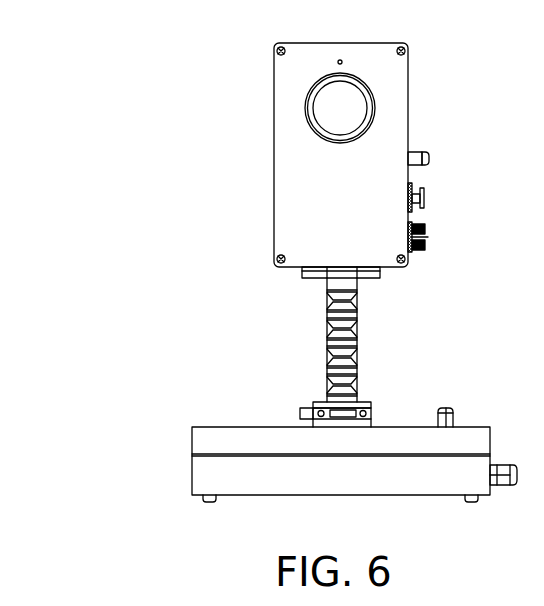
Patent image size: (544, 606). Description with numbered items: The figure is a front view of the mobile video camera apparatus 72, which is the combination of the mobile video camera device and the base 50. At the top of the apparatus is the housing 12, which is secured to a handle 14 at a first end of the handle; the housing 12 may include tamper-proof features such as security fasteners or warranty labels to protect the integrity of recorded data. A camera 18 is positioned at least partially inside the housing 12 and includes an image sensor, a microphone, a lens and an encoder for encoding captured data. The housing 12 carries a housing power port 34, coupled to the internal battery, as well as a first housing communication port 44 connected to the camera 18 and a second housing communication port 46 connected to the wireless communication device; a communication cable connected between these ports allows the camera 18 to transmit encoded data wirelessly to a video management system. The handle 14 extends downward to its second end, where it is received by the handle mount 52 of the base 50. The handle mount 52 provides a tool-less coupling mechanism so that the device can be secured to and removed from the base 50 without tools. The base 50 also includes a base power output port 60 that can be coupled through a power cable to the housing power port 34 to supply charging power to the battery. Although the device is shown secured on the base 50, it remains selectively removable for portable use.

The housing 12 is at (274, 80).
The handle 14 is at (327, 343).
The camera 18 is at (372, 109).
The housing power port 34 is at (424, 198).
The first housing communication port 44 is at (429, 158).
The second housing communication port 46 is at (428, 237).
The base 50 is at (226, 427).
The handle mount 52 is at (365, 418).
The base power output port 60 is at (452, 420).
The mobile video camera apparatus 72 is at (200, 233).